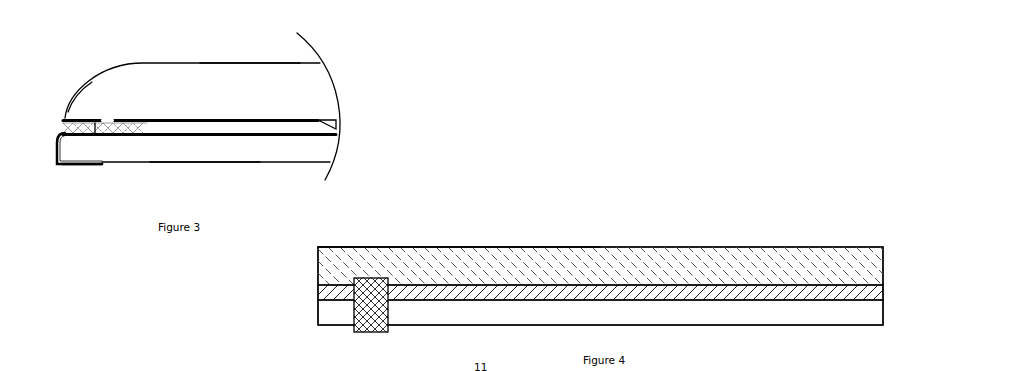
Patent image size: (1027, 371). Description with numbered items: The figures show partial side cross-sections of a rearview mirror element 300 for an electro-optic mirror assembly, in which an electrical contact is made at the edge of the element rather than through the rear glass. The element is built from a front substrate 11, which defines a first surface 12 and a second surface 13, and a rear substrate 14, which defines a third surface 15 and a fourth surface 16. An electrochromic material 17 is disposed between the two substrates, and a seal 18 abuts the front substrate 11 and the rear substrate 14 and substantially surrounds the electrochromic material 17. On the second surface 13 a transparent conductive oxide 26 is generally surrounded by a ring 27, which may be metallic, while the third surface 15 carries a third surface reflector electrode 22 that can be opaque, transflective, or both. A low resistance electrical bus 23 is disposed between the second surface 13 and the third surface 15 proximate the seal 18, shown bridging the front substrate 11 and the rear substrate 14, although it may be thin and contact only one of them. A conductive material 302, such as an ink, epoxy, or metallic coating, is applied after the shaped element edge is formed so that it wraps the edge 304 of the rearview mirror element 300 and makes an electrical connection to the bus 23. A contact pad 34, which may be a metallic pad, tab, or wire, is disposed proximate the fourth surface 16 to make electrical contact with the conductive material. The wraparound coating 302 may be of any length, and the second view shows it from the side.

In FIG. 3, the rearview mirror element 300 is at (365, 30).
In FIG. 4, the rearview mirror element 300 is at (837, 199).
In FIG. 3, the front substrate 11 is at (116, 82).
In FIG. 4, the front substrate 11 is at (747, 257).
In FIG. 3, the first surface 12 is at (258, 63).
In FIG. 3, the second surface 13 is at (318, 118).
In FIG. 3, the rear substrate 14 is at (319, 155).
In FIG. 4, the rear substrate 14 is at (768, 316).
In FIG. 3, the third surface 15 is at (318, 135).
In FIG. 3, the fourth surface 16 is at (203, 163).
In FIG. 3, the electrochromic material 17 is at (340, 119).
In FIG. 3, the seal 18 is at (130, 145).
In FIG. 3, the third surface reflector electrode 22 is at (245, 146).
In FIG. 3, the electrical bus 23 is at (55, 124).
In FIG. 4, the electrical bus 23 is at (325, 292).
In FIG. 3, the transparent conductive oxide 26 is at (249, 109).
In FIG. 3, the ring 27 is at (133, 109).
In FIG. 3, the contact pad 34 is at (73, 174).
In FIG. 3, the conductive material 302 is at (47, 150).
In FIG. 4, the conductive material 302 is at (386, 326).
In FIG. 3, the edge 304 is at (80, 93).
In FIG. 4, the edge 304 is at (338, 264).